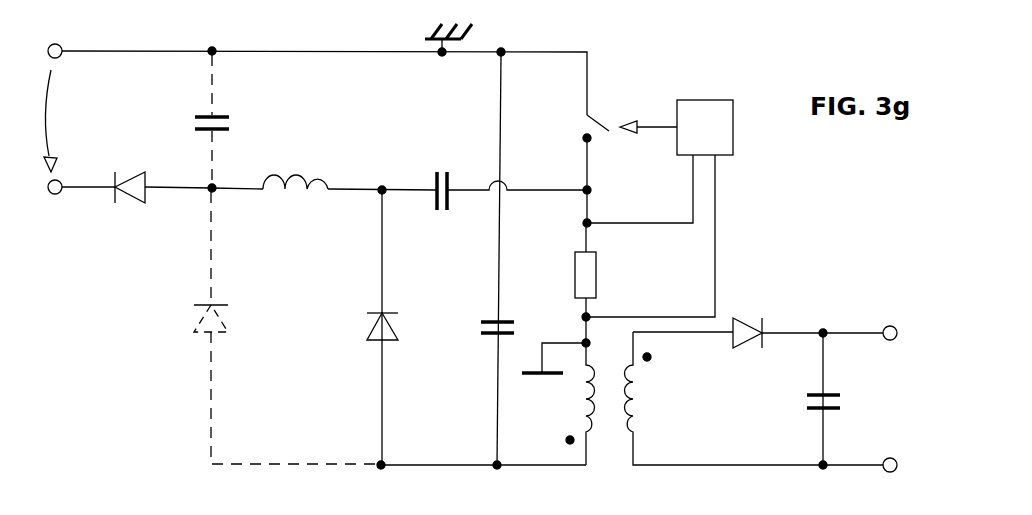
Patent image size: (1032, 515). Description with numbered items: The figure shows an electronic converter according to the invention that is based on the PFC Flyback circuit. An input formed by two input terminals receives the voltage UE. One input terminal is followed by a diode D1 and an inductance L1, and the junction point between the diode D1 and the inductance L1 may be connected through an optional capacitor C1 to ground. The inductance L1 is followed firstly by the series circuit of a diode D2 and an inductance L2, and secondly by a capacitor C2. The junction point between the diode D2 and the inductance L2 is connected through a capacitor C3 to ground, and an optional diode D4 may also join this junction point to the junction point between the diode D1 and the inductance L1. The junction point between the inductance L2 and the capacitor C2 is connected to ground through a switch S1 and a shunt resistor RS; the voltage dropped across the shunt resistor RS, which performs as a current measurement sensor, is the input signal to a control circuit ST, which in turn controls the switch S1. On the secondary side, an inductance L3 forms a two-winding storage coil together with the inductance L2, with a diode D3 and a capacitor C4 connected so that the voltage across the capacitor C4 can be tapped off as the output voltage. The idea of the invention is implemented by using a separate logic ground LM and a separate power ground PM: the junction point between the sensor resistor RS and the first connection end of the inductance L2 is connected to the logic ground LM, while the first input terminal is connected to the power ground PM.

The input voltage UE is at (68, 121).
The capacitor C1 is at (232, 119).
The diode D1 is at (135, 205).
The inductance L1 is at (295, 164).
The diode D4 is at (287, 328).
The capacitor C2 is at (432, 177).
The power ground PM is at (469, 35).
The diode D2 is at (405, 329).
The capacitor C3 is at (508, 260).
The switch S1 is at (612, 168).
The control circuit ST is at (659, 208).
The shunt resistor RS is at (602, 285).
The logic ground LM is at (550, 373).
The inductance L2 is at (571, 404).
The inductance L3 is at (754, 398).
The diode D3 is at (807, 320).
The capacitor C4 is at (842, 399).